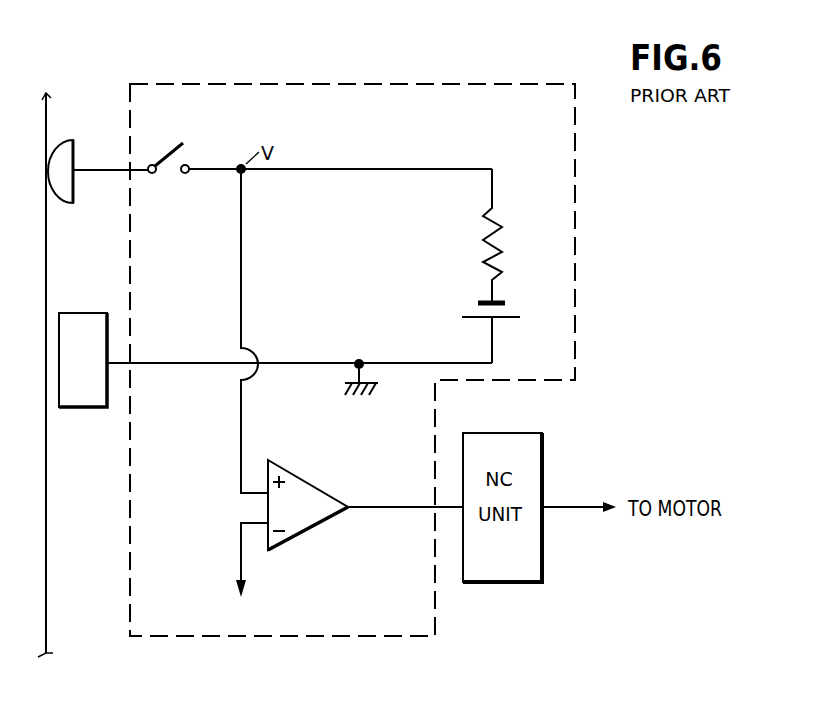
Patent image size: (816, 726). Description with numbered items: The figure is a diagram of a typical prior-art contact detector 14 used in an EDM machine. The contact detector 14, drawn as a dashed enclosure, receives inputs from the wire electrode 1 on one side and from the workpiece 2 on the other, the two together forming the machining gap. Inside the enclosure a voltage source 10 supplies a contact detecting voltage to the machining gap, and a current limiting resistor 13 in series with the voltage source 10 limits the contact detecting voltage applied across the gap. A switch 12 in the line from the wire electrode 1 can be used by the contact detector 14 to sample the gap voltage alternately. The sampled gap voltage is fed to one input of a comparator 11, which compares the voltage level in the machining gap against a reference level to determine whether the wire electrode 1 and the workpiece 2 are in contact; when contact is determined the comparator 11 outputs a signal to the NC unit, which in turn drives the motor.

The wire electrode 1 is at (46, 216).
The workpiece 2 is at (93, 325).
The voltage source 10 is at (504, 312).
The comparator 11 is at (298, 490).
The switch 12 is at (183, 160).
The current limiting resistor 13 is at (503, 242).
The contact detector 14 is at (484, 85).